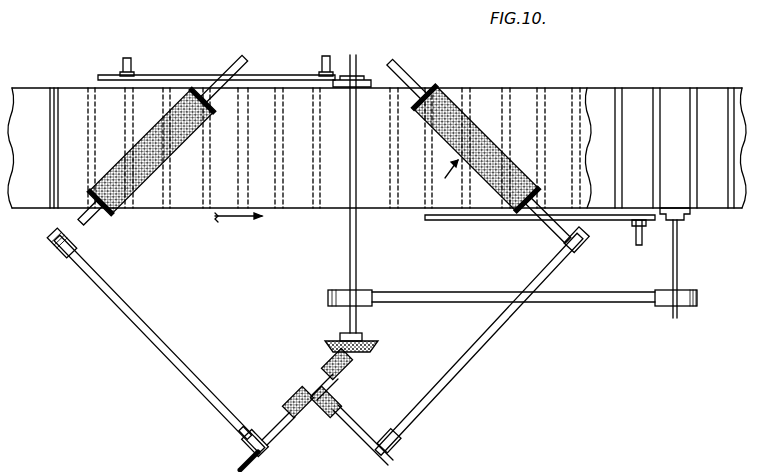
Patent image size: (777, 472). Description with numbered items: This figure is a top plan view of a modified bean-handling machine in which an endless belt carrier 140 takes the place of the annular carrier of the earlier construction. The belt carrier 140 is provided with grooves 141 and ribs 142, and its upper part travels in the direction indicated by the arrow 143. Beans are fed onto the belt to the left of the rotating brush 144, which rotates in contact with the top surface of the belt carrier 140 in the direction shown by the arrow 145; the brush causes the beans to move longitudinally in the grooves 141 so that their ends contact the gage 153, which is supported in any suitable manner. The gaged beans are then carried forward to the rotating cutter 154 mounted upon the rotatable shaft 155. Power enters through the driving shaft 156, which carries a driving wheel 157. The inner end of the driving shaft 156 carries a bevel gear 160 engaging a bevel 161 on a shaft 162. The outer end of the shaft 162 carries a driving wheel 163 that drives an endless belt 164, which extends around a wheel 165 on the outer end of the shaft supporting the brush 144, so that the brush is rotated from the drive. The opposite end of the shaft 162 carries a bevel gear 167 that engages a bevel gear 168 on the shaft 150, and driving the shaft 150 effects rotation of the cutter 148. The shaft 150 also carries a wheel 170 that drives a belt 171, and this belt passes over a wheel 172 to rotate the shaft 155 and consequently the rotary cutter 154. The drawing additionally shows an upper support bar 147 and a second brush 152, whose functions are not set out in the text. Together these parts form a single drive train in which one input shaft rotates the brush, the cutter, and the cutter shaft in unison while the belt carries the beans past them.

The endless belt carrier 140 is at (632, 98).
The grooves 141 is at (700, 90).
The ribs 142 is at (582, 88).
The arrow 143 is at (240, 220).
The rotating brush 144 is at (178, 100).
The arrow 145 is at (127, 143).
The upper support bar 147 is at (190, 75).
The cutter 148 is at (371, 80).
The shaft 150 is at (357, 254).
The second brush 152 is at (448, 100).
The gage 153 is at (498, 220).
The rotating cutter 154 is at (690, 217).
The rotatable shaft 155 is at (673, 268).
The driving shaft 156 is at (375, 395).
The driving wheel 157 is at (412, 468).
The bevel gear 160 is at (322, 415).
The bevel 161 is at (303, 385).
The shaft 162 is at (272, 425).
The driving wheel 163 is at (240, 440).
The endless belt 164 is at (150, 312).
The wheel 165 is at (78, 243).
The bevel gear 167 is at (352, 368).
The bevel gear 168 is at (378, 345).
The wheel 170 is at (372, 292).
The belt 171 is at (556, 303).
The wheel 172 is at (690, 308).